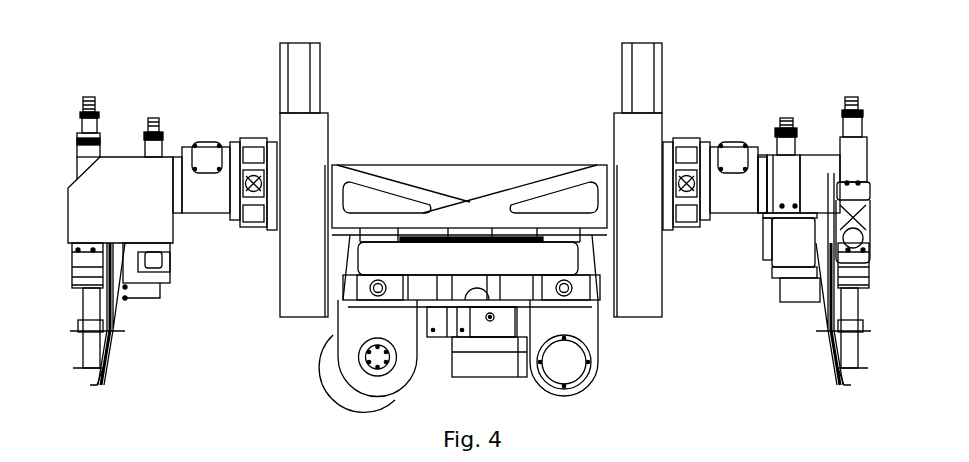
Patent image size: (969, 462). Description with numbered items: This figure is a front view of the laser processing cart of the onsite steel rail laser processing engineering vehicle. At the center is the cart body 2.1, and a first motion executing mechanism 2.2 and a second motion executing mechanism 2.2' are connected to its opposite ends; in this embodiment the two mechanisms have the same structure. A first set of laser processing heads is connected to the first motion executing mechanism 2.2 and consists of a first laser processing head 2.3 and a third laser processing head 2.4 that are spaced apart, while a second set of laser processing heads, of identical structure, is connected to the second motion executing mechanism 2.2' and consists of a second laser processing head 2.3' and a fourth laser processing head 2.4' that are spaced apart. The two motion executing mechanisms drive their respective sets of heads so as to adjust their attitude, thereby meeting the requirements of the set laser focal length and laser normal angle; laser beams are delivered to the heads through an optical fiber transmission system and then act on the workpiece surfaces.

The cart body 2.1 is at (418, 253).
The first motion executing mechanism 2.2 is at (667, 166).
The second motion executing mechanism 2.2' is at (264, 166).
The first laser processing head 2.3 is at (804, 114).
The second laser processing head 2.3' is at (132, 86).
The third laser processing head 2.4 is at (875, 99).
The fourth laser processing head 2.4' is at (68, 87).